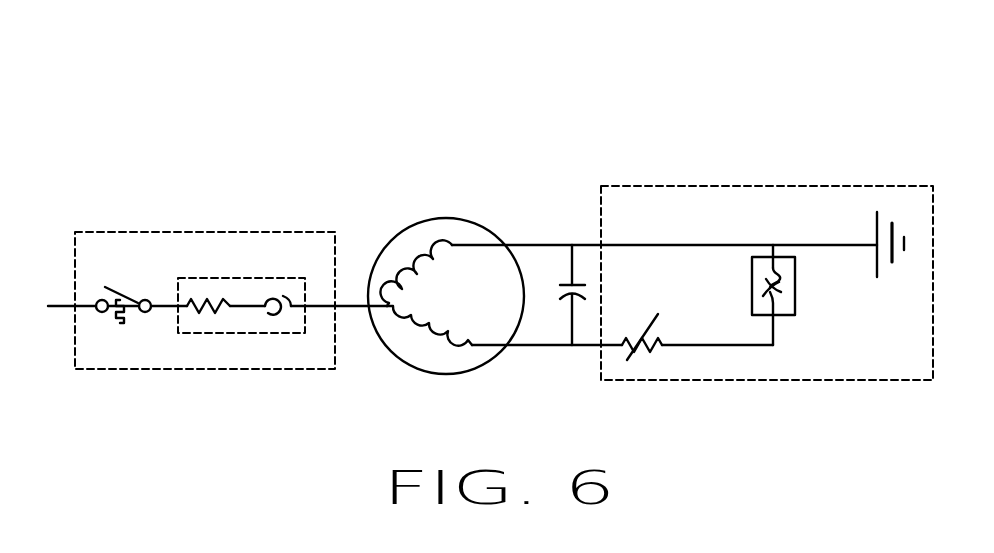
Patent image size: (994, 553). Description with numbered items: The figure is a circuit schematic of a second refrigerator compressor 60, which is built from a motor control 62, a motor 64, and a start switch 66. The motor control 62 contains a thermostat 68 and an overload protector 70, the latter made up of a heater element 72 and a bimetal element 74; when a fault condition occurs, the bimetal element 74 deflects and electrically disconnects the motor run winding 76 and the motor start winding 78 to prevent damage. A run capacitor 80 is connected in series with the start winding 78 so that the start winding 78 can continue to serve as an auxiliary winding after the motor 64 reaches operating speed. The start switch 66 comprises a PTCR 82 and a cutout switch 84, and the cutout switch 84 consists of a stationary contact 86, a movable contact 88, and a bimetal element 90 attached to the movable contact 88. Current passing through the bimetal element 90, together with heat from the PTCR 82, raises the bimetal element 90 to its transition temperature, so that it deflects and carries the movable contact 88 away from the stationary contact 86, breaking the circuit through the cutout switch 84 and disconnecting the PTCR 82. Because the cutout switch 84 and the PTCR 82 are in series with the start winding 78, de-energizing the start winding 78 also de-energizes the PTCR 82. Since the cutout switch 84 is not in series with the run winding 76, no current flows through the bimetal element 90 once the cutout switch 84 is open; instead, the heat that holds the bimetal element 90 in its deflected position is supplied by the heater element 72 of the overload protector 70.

The refrigerator compressor 60 is at (709, 112).
The motor control 62 is at (137, 232).
The motor 64 is at (443, 217).
The start switch 66 is at (798, 183).
The thermostat 68 is at (136, 324).
The overload protector 70 is at (285, 335).
The heater element 72 is at (212, 310).
The bimetal element 74 is at (283, 296).
The motor run winding 76 is at (447, 260).
The motor start winding 78 is at (452, 333).
The run capacitor 80 is at (560, 306).
The PTCR 82 is at (643, 353).
The cutout switch 84 is at (810, 311).
The stationary contact 86 is at (763, 298).
The movable contact 88 is at (777, 275).
The bimetal element 90 is at (777, 262).